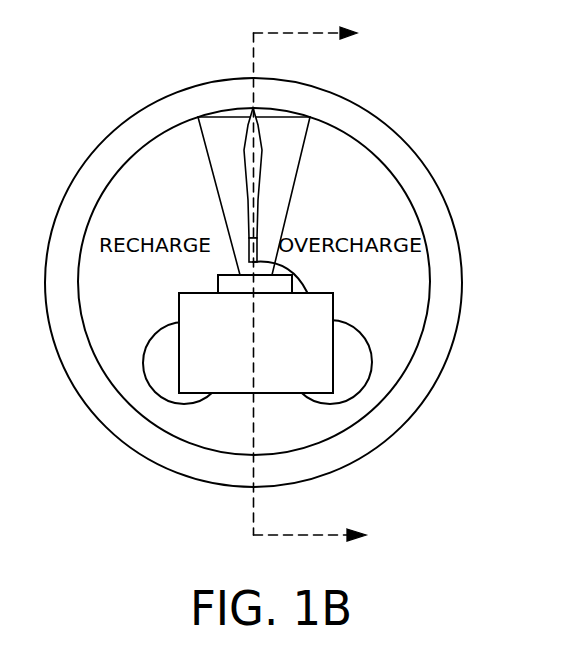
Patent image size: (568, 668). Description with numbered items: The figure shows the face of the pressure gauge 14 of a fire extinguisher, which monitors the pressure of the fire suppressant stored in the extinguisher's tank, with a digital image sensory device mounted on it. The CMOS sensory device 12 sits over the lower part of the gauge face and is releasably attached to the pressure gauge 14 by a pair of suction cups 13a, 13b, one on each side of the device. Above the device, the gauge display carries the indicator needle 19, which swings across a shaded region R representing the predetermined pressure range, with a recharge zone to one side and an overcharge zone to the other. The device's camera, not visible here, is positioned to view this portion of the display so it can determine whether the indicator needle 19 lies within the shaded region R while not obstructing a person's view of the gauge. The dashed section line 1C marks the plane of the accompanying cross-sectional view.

The CMOS sensory device 12 is at (310, 313).
The suction cup 13a is at (355, 378).
The suction cup 13b is at (158, 373).
The pressure gauge 14 is at (123, 190).
The indicator needle 19 is at (252, 120).
The shaded region R is at (220, 157).
The section line 1C- 1C is at (329, 285).